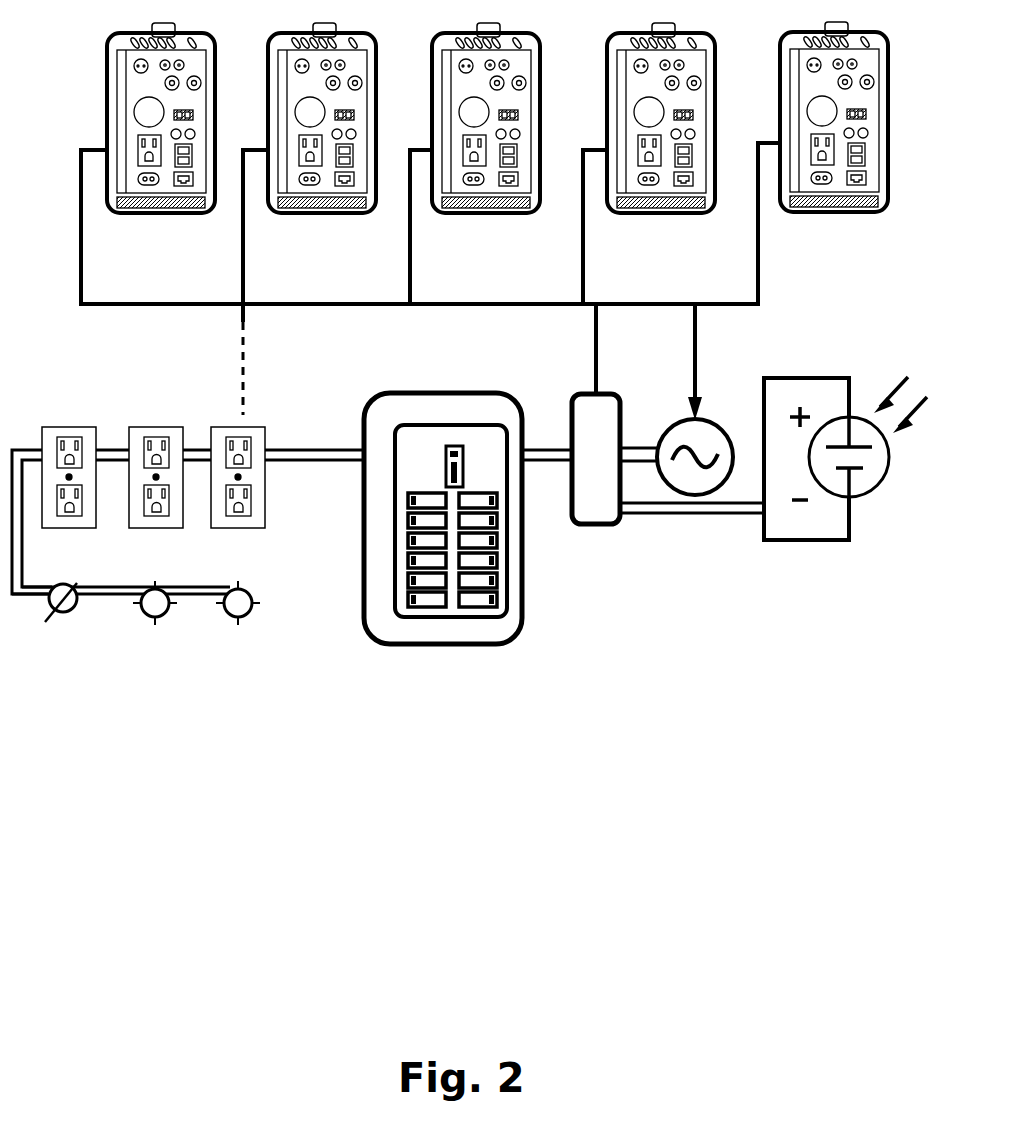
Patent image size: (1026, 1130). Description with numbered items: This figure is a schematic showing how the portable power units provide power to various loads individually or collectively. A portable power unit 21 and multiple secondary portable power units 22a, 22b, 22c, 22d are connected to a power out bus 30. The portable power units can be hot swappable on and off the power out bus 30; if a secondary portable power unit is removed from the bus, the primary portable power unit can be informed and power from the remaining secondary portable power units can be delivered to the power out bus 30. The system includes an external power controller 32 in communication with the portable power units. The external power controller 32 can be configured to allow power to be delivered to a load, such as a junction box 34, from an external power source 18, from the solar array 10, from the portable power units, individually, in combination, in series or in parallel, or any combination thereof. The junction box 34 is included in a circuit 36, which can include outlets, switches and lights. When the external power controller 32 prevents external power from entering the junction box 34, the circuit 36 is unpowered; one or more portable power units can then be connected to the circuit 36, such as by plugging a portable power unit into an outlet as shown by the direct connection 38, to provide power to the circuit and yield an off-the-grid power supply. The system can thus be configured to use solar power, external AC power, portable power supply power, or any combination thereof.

The solar array 10 is at (785, 378).
The external power source 18 is at (668, 427).
The portable power unit 21 is at (134, 37).
The secondary portable power unit 22a is at (296, 37).
The secondary portable power unit 22b is at (460, 37).
The secondary portable power unit 22c is at (634, 37).
The secondary portable power unit 22d is at (807, 36).
The power out bus 30 is at (80, 213).
The external power controller 32 is at (566, 400).
The junction box 34 is at (395, 393).
The circuit 36 is at (157, 386).
The direct connection 38 is at (242, 381).